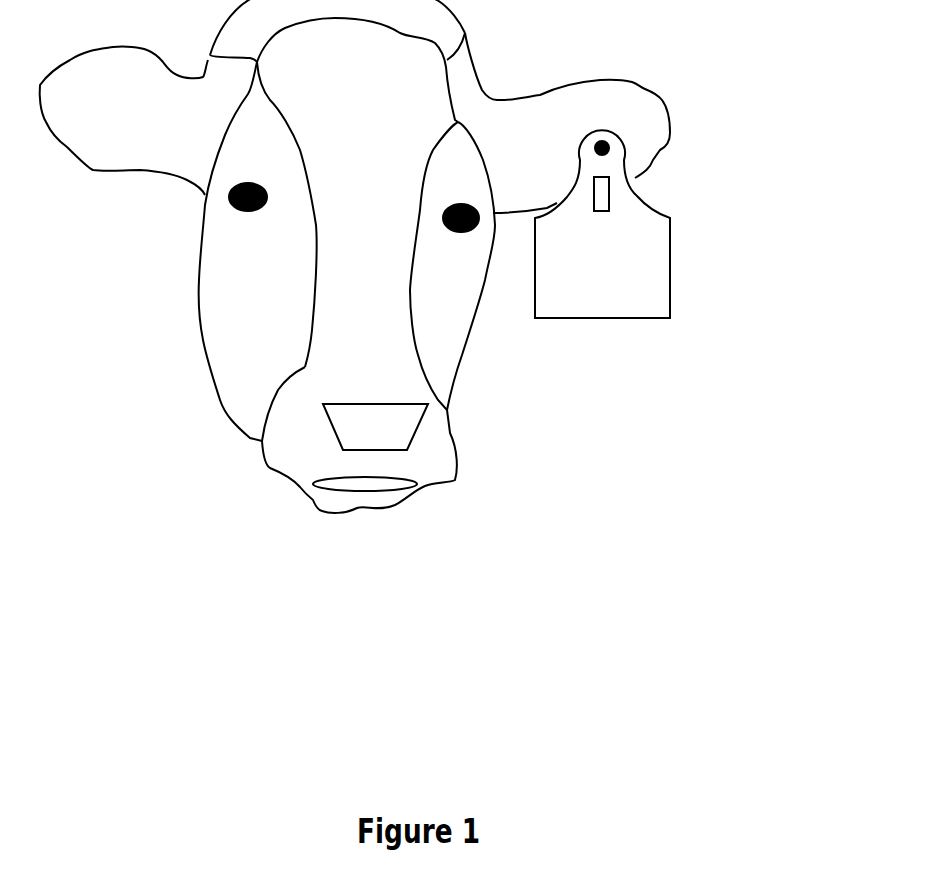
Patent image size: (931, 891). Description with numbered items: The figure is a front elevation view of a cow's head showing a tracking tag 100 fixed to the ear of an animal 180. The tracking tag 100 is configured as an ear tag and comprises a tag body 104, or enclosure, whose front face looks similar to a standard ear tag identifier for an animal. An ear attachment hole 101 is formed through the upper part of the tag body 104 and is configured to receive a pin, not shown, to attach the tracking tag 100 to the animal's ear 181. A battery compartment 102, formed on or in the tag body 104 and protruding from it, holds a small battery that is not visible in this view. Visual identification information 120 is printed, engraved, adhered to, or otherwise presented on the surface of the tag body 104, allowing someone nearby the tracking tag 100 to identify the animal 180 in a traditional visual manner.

The tracking tag 100 is at (676, 250).
The ear attachment hole 101 is at (611, 148).
The battery compartment 102 is at (611, 198).
The tag body 104 is at (601, 314).
The visual identification information 120 is at (654, 279).
The animal 180 is at (418, 256).
The ear 181 is at (651, 120).